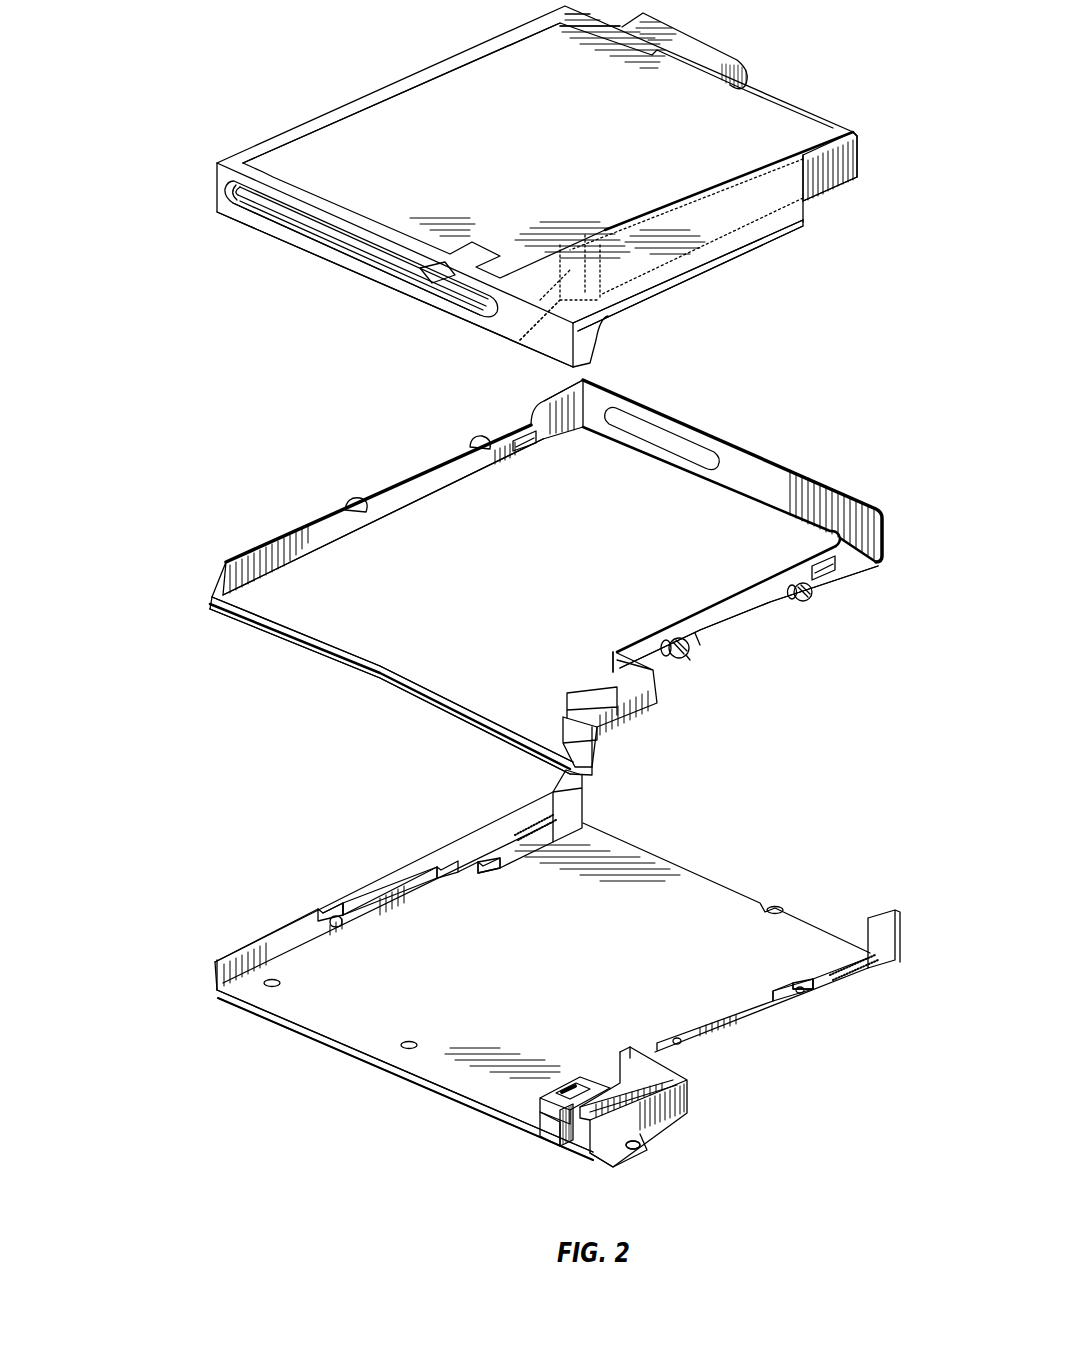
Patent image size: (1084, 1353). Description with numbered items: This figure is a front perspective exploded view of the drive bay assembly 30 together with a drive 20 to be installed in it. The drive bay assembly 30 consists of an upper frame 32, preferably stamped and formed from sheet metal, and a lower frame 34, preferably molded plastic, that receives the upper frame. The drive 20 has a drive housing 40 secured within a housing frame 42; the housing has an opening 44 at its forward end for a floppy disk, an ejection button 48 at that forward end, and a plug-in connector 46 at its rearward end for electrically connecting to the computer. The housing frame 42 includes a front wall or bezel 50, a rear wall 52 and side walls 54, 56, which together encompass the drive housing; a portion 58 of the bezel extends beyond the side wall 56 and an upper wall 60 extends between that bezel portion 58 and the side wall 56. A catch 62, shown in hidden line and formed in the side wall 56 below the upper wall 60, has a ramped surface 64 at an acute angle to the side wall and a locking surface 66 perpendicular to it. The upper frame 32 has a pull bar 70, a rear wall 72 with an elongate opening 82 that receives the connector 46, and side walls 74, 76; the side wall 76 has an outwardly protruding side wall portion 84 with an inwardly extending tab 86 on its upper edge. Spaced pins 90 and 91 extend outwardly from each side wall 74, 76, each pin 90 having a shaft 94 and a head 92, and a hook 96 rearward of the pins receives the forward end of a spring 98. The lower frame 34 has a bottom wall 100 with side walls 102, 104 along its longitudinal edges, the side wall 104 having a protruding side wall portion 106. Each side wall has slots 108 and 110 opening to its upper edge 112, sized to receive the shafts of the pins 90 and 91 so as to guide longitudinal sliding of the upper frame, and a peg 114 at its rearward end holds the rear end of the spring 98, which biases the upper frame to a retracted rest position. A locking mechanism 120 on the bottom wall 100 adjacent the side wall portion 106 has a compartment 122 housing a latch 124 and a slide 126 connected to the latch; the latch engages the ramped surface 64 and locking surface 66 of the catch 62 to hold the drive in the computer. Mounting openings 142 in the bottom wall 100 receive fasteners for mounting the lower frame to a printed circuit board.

The drive 20 is at (308, 128).
The drive bay assembly 30 is at (160, 418).
The upper frame 32 is at (738, 440).
The lower frame 34 is at (689, 858).
The drive housing 40 is at (493, 97).
The housing frame 42 is at (781, 97).
The opening 44 is at (247, 203).
The plug-in connector 46 is at (697, 50).
The ejection button 48 is at (425, 285).
The bezel 50 is at (455, 320).
The rear wall 52 is at (832, 122).
The side wall 54 is at (405, 78).
The side wall 56 is at (840, 180).
The bezel portion 58 is at (536, 350).
The upper wall 60 is at (793, 222).
The catch 62 is at (545, 233).
The ramped surface 64 is at (606, 320).
The locking surface 66 is at (510, 340).
The pull bar 70 is at (228, 615).
The rear wall 72 is at (766, 485).
The side wall 74 is at (362, 510).
The side wall 76 is at (746, 620).
The elongate opening 82 is at (666, 430).
The side wall portion 84 is at (640, 700).
The tab 86 is at (597, 683).
The pin 90 is at (478, 432).
The pin 91 is at (352, 497).
The head 92 is at (698, 630).
The shaft 94 is at (665, 640).
The hook 96 is at (540, 440).
The spring 98 is at (546, 815).
The bottom wall 100 is at (320, 1020).
The side wall 102 is at (435, 870).
The side wall 104 is at (762, 1020).
The side wall portion 106 is at (680, 1115).
The slot 108 is at (496, 860).
The slot 110 is at (366, 920).
The upper edge 112 is at (385, 890).
The peg 114 is at (890, 935).
The locking mechanism 120 is at (606, 1072).
The compartment 122 is at (532, 1115).
The latch 124 is at (565, 1080).
The slide 126 is at (552, 1145).
The mounting openings 142 is at (779, 900).